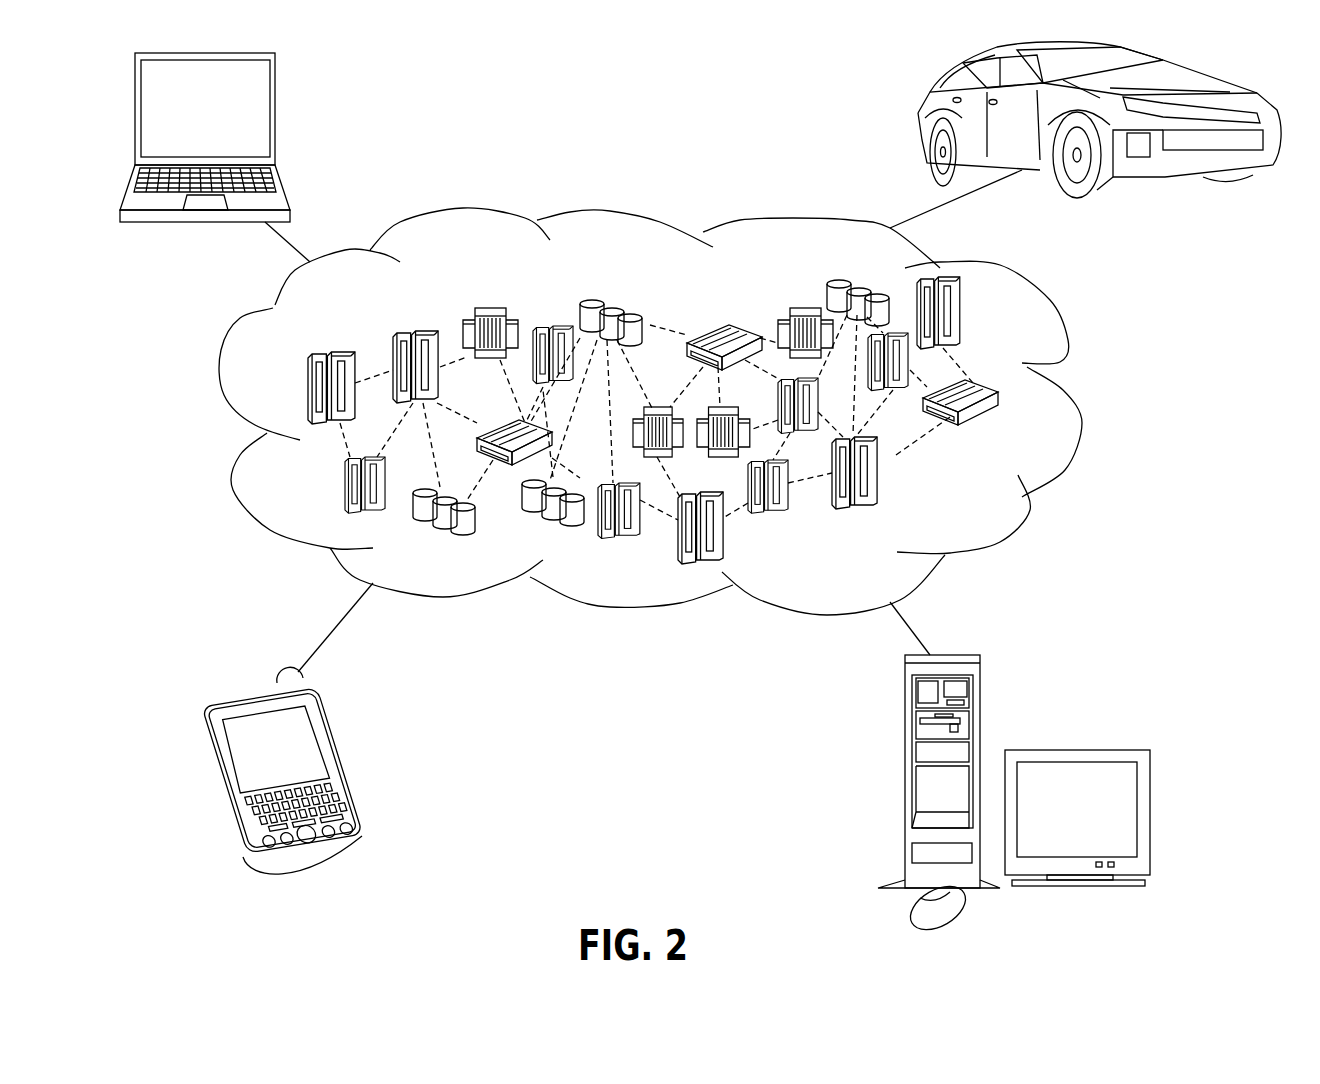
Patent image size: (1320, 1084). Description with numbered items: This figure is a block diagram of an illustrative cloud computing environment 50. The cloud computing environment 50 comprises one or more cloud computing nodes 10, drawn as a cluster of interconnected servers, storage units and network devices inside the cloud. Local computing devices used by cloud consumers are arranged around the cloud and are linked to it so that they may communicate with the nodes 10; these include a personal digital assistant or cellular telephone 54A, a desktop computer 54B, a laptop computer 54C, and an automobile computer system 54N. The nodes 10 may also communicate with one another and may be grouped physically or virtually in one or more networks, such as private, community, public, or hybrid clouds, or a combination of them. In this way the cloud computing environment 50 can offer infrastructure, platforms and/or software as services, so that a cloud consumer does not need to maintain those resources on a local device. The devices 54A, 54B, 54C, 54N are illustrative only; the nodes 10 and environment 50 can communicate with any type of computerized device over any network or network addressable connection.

The cloud computing nodes 10 is at (983, 505).
The cloud computing environment 50 is at (1073, 400).
The personal digital assistant (PDA) or cellular telephone 54A is at (330, 730).
The desktop computer 54B is at (905, 716).
The laptop computer 54C is at (276, 93).
The automobile computer system 54N is at (917, 118).